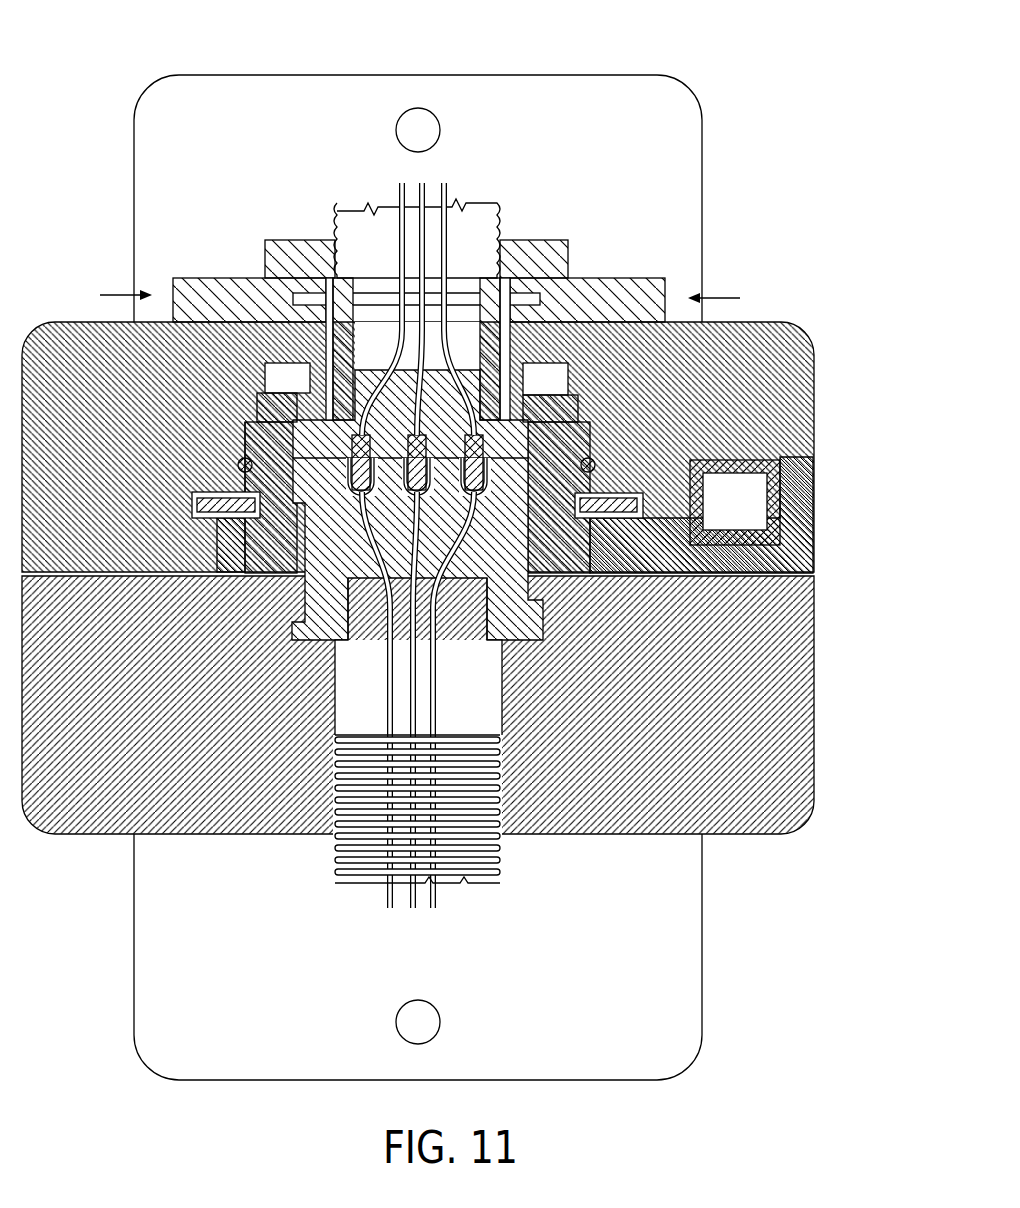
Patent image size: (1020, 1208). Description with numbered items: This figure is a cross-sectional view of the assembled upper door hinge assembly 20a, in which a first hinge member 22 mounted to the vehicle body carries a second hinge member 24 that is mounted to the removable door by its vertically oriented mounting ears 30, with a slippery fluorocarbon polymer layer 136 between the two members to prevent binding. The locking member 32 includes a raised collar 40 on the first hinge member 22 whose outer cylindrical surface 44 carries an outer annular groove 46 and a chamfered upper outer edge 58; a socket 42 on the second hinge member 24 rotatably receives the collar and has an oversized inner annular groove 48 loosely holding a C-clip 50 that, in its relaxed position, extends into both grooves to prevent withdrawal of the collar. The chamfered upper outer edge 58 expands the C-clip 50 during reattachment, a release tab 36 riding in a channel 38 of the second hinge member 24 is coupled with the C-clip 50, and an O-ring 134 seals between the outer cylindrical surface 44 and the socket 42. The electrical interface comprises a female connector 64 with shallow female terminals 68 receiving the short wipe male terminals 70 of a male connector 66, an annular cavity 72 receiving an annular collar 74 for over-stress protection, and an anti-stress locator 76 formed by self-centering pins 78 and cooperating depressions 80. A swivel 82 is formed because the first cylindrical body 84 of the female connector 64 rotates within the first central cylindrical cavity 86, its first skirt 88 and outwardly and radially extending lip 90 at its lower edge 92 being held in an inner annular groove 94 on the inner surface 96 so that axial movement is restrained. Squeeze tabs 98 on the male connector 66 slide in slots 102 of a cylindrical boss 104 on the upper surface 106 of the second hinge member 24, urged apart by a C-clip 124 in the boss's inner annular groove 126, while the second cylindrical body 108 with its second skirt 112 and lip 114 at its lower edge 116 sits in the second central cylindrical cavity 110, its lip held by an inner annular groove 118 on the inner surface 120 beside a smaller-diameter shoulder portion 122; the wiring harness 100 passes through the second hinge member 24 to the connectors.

The upper door hinge assembly 20a is at (86, 137).
The first hinge member 22 is at (790, 640).
The second hinge member 24 is at (815, 434).
The mounting ears 30 is at (637, 114).
The locking member 32 is at (840, 481).
The release tab 36 is at (788, 502).
The channel 38 is at (778, 488).
The raised collar 40 is at (612, 492).
The socket 42 is at (568, 560).
The outer cylindrical surface 44 is at (232, 575).
The outer annular groove 46 is at (280, 500).
The inner annular groove 48 is at (200, 492).
The C-clip 50 is at (255, 518).
The chamfered upper outer edge 58 is at (590, 460).
The female connector 64 is at (545, 600).
The male connector 66 is at (525, 330).
The female terminals 68 is at (395, 535).
The male terminals 70 is at (425, 375).
The annular cavity 72 is at (575, 405).
The annular collar 74 is at (360, 520).
The anti-stress locator 76 is at (320, 370).
The self-centering pins 78 is at (300, 560).
The cooperating depressions 80 is at (490, 540).
The swivel 82 is at (378, 645).
The first cylindrical body 84 is at (540, 625).
The first central cylindrical cavity 86 is at (500, 697).
The first skirt 88 is at (523, 555).
The outwardly and radially extending lip 90 is at (295, 642).
The lower edge 92 is at (315, 690).
The inner annular groove 94 is at (296, 628).
The inner surface 96 is at (503, 706).
The squeeze tabs 98 is at (237, 285).
The wiring harness 100 is at (458, 200).
The slots 102 is at (297, 268).
The cylindrical boss 104 is at (341, 266).
The upper surface 106 is at (98, 312).
The second cylindrical body 108 is at (525, 340).
The second central cylindrical cavity 110 is at (325, 352).
The second skirt 112 is at (522, 350).
The outwardly and radially extending lip 114 is at (570, 378).
The lower edge 116 is at (262, 392).
The inner annular groove 118 is at (285, 415).
The inner surface 120 is at (525, 335).
The shoulder portion 122 is at (320, 340).
The C-clip 124 is at (330, 300).
The inner annular groove 126 is at (507, 290).
The O-ring 134 is at (240, 465).
The layer 136 is at (788, 566).